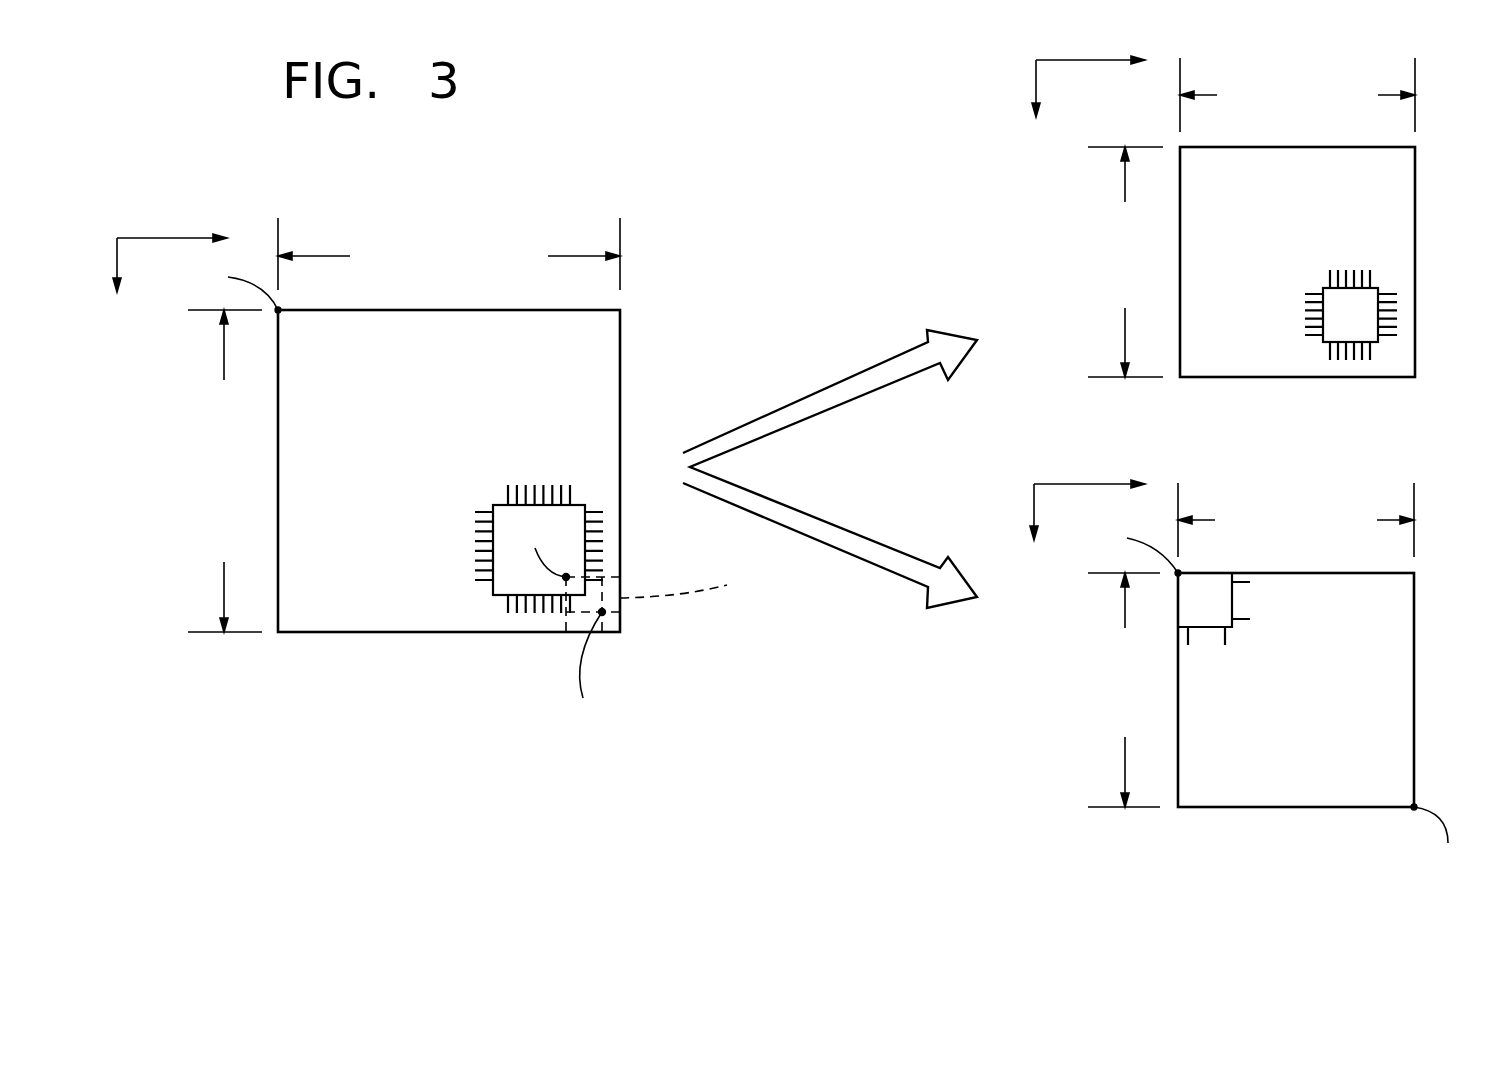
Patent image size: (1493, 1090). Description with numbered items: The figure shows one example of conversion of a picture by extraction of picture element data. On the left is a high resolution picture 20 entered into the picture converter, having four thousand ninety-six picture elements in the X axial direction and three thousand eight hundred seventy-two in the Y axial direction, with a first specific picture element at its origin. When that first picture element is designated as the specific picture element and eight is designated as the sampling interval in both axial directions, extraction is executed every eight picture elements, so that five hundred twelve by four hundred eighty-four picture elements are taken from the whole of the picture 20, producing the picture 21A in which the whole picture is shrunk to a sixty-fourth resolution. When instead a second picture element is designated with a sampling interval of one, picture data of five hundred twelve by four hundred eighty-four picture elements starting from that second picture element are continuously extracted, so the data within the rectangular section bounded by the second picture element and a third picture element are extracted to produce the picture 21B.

The high resolution picture 20 is at (623, 385).
The picture produced by sampling extraction 21A is at (1415, 255).
The picture produced by continuous extraction 21B is at (1414, 730).